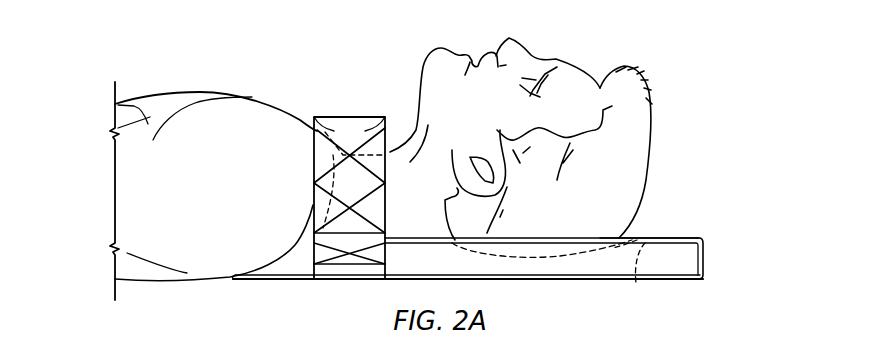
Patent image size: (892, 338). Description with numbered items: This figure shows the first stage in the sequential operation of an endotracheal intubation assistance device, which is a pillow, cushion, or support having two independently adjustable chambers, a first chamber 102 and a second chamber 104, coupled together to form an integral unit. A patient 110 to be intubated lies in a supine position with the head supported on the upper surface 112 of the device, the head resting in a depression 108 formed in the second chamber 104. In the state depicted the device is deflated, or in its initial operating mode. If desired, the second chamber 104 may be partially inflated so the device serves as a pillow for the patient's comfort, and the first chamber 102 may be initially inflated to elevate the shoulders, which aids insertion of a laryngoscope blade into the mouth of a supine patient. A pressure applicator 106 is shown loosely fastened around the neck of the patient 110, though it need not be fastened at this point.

The first chamber 102 is at (283, 284).
The second chamber 104 is at (706, 262).
The pressure applicator 106 is at (353, 115).
The depression 108 is at (636, 283).
The patient 110 is at (186, 95).
The upper surface 112 is at (690, 237).